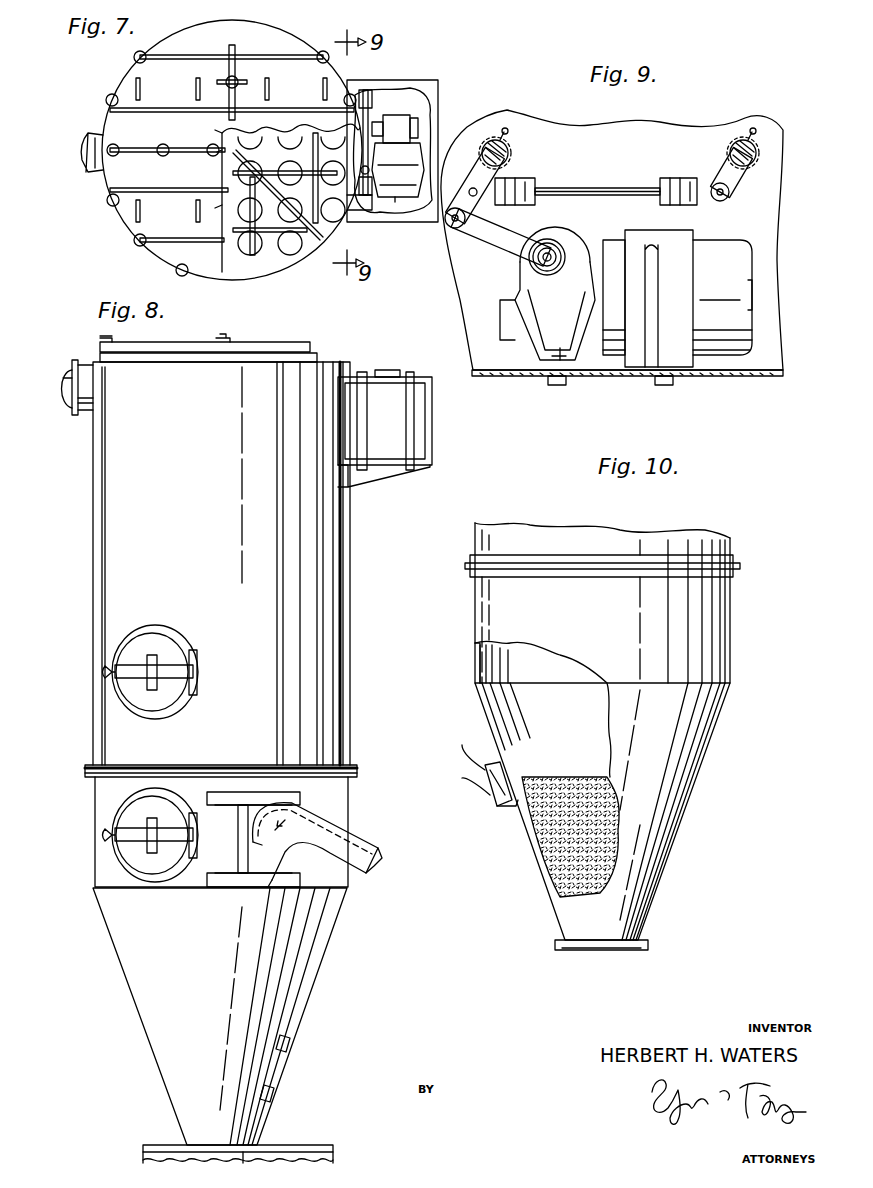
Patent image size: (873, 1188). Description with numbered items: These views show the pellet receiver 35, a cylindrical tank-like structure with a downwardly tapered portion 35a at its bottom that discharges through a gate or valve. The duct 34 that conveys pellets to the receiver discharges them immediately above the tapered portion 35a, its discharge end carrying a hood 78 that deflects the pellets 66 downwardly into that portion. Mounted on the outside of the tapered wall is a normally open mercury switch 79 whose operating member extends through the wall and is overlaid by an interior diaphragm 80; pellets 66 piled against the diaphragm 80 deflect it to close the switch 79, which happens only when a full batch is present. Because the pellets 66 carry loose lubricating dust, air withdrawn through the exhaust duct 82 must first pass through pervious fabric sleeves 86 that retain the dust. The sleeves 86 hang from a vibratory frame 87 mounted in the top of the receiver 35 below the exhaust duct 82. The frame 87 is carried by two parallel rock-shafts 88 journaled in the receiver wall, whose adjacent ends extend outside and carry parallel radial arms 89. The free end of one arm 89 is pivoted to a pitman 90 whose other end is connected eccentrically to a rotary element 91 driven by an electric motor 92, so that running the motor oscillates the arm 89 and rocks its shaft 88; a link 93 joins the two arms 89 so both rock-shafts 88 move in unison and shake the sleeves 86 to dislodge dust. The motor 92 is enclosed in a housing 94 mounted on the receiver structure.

In FIG. 8, the duct 34 is at (360, 874).
In FIG. 7, the pellet receiver 35 is at (122, 212).
In FIG. 8, the pellet receiver 35 is at (340, 566).
In FIG. 10, the pellet receiver 35 is at (480, 596).
In FIG. 8, the downwardly tapered portion 35a is at (305, 986).
In FIG. 10, the downwardly tapered portion 35a is at (676, 812).
In FIG. 10, the pellets 66 is at (562, 778).
In FIG. 8, the hood 78 is at (300, 808).
In FIG. 10, the mercury switch 79 is at (508, 806).
In FIG. 10, the diaphragm 80 is at (505, 766).
In FIG. 7, the exhaust duct 82 is at (92, 168).
In FIG. 8, the exhaust duct 82 is at (84, 417).
In FIG. 7, the fabric sleeves 86 is at (268, 133).
In FIG. 7, the vibratory frame 87 is at (233, 165).
In FIG. 7, the rock-shafts 88 is at (325, 203).
In FIG. 9, the rock-shafts 88 is at (487, 142).
In FIG. 7, the radial arms 89 is at (369, 92).
In FIG. 9, the radial arms 89 is at (476, 165).
In FIG. 9, the pitman 90 is at (500, 245).
In FIG. 9, the rotary element 91 is at (574, 246).
In FIG. 7, the electric motor 92 is at (402, 225).
In FIG. 9, the electric motor 92 is at (740, 276).
In FIG. 7, the link 93 is at (395, 100).
In FIG. 9, the link 93 is at (590, 190).
In FIG. 7, the housing 94 is at (435, 232).
In FIG. 9, the housing 94 is at (776, 370).
In FIG. 8, the housing 94 is at (392, 386).